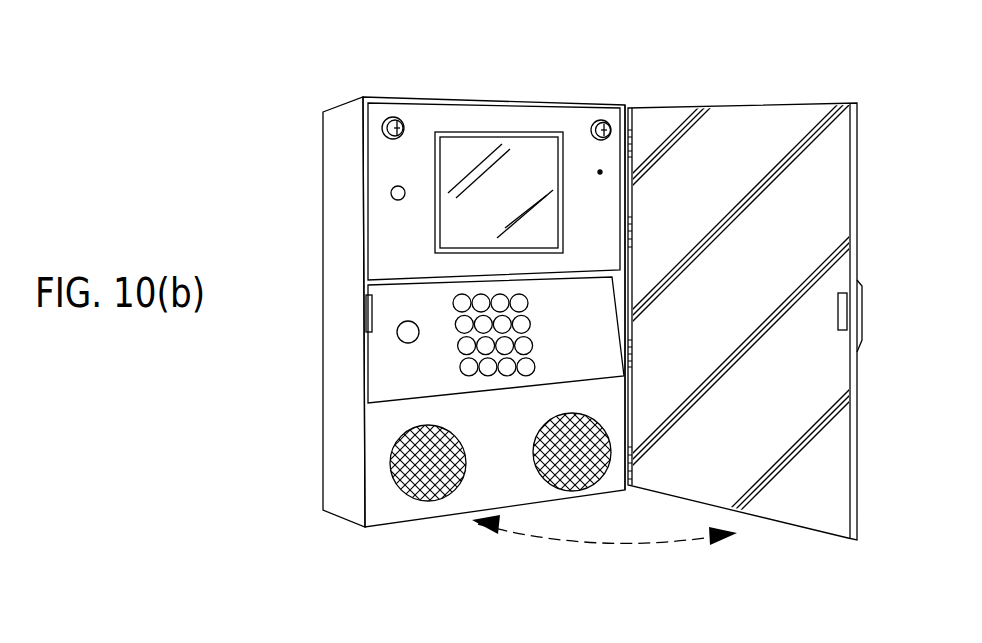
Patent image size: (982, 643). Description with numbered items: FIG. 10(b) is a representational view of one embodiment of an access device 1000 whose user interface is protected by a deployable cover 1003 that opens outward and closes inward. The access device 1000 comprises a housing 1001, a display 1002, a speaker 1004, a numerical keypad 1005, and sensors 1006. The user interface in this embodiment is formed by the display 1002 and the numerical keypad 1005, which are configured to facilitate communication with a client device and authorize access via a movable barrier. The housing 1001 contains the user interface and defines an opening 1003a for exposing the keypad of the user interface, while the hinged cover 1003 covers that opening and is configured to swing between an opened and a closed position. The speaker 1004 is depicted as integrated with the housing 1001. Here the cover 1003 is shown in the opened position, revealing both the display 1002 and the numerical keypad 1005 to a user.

The access device 1000 is at (226, 420).
The housing 1001 is at (323, 163).
The display 1002 is at (487, 158).
The deployable cover 1003 is at (827, 368).
The opening 1003a is at (383, 257).
The speaker 1004 is at (430, 513).
The numerical keypad 1005 is at (430, 348).
The sensors 1006 is at (603, 167).